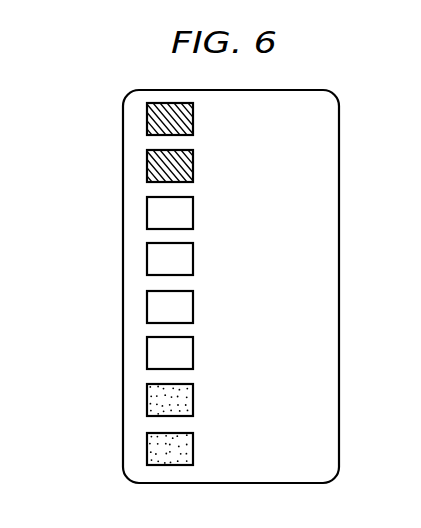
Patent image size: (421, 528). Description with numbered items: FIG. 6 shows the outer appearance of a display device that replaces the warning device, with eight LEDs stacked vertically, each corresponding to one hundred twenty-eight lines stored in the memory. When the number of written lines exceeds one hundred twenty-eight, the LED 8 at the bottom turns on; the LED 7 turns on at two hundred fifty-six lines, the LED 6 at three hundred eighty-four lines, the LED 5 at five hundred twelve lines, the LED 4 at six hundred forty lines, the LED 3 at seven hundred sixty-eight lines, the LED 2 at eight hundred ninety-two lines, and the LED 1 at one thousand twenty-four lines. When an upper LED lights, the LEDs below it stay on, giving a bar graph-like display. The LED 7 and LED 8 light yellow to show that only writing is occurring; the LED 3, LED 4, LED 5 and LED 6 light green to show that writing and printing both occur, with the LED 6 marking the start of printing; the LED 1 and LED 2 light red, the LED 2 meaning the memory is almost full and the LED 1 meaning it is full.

The LED LED 1 is at (155, 117).
The LED LED 2 is at (155, 164).
The LED LED 3 is at (155, 211).
The LED LED 4 is at (155, 257).
The LED LED 5 is at (155, 304).
The LED LED 6 is at (155, 351).
The LED LED 7 is at (155, 398).
The LED LED 8 is at (155, 447).